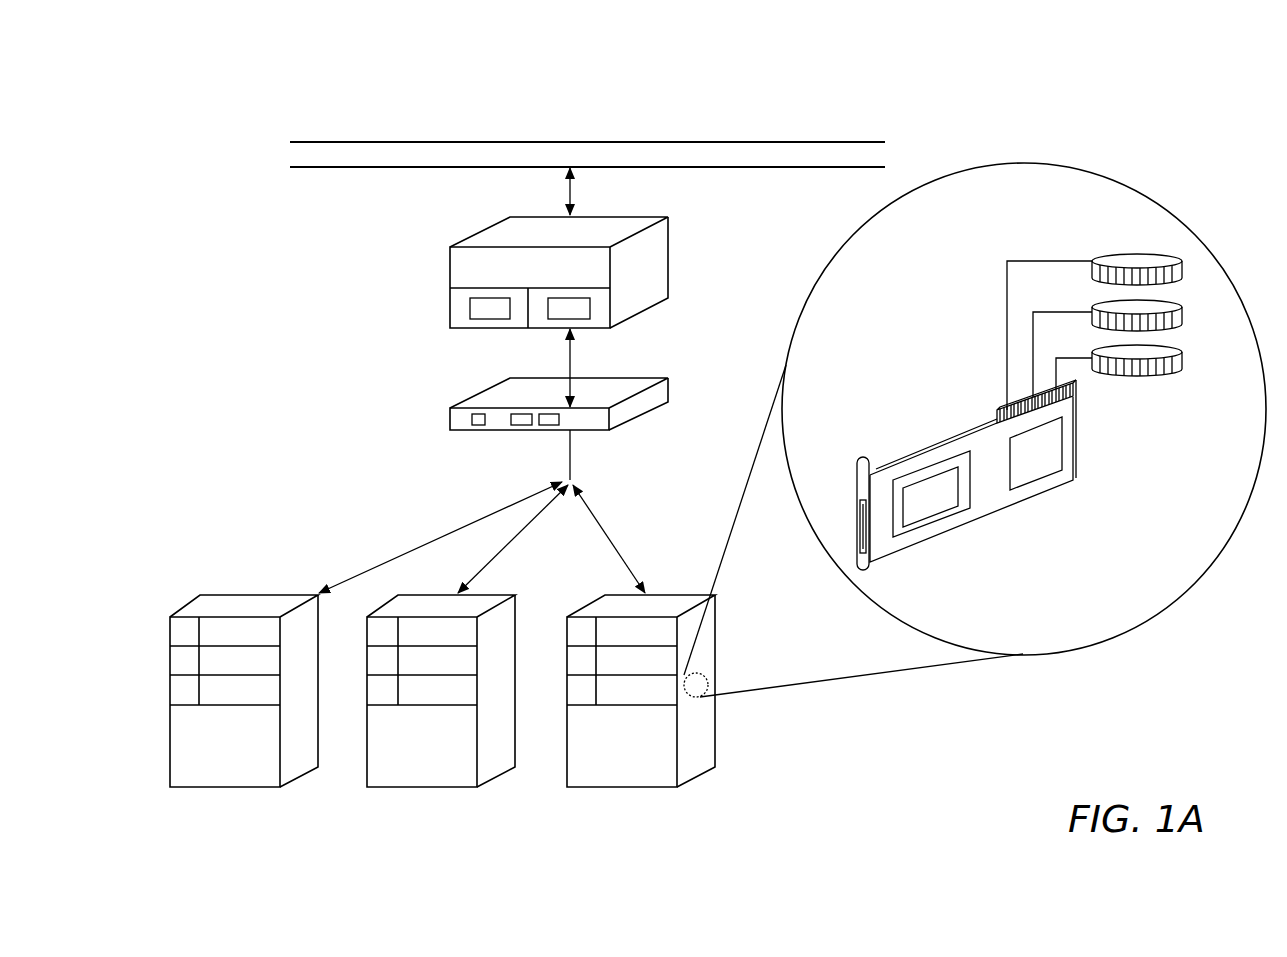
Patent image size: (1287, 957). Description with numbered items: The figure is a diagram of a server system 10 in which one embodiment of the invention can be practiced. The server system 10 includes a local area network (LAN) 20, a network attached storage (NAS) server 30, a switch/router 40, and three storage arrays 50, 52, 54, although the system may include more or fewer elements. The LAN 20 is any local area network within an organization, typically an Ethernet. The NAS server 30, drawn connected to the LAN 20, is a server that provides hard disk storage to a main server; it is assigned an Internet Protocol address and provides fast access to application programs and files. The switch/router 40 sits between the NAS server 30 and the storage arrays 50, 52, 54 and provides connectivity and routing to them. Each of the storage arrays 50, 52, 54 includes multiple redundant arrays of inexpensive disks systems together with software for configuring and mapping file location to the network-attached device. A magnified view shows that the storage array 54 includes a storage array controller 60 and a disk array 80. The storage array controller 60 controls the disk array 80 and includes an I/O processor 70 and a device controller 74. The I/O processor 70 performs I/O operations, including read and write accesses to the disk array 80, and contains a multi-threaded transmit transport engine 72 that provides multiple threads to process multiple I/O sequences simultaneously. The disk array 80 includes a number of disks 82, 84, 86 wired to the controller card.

The server system 10 is at (1095, 118).
The local area network (LAN) 20 is at (855, 146).
The network attached storage (NAS) server 30 is at (452, 261).
The switch/router 40 is at (452, 413).
The storage array 50 is at (228, 599).
The storage array 52 is at (443, 599).
The storage array 54 is at (667, 599).
The storage array controller 60 is at (985, 508).
The I/O processor 70 is at (898, 530).
The multi-threaded transmit transport engine 72 is at (918, 489).
The device controller 74 is at (1057, 455).
The disk array 80 is at (1100, 341).
The disk 82 is at (1143, 257).
The disk 84 is at (1183, 318).
The disk 86 is at (1183, 362).